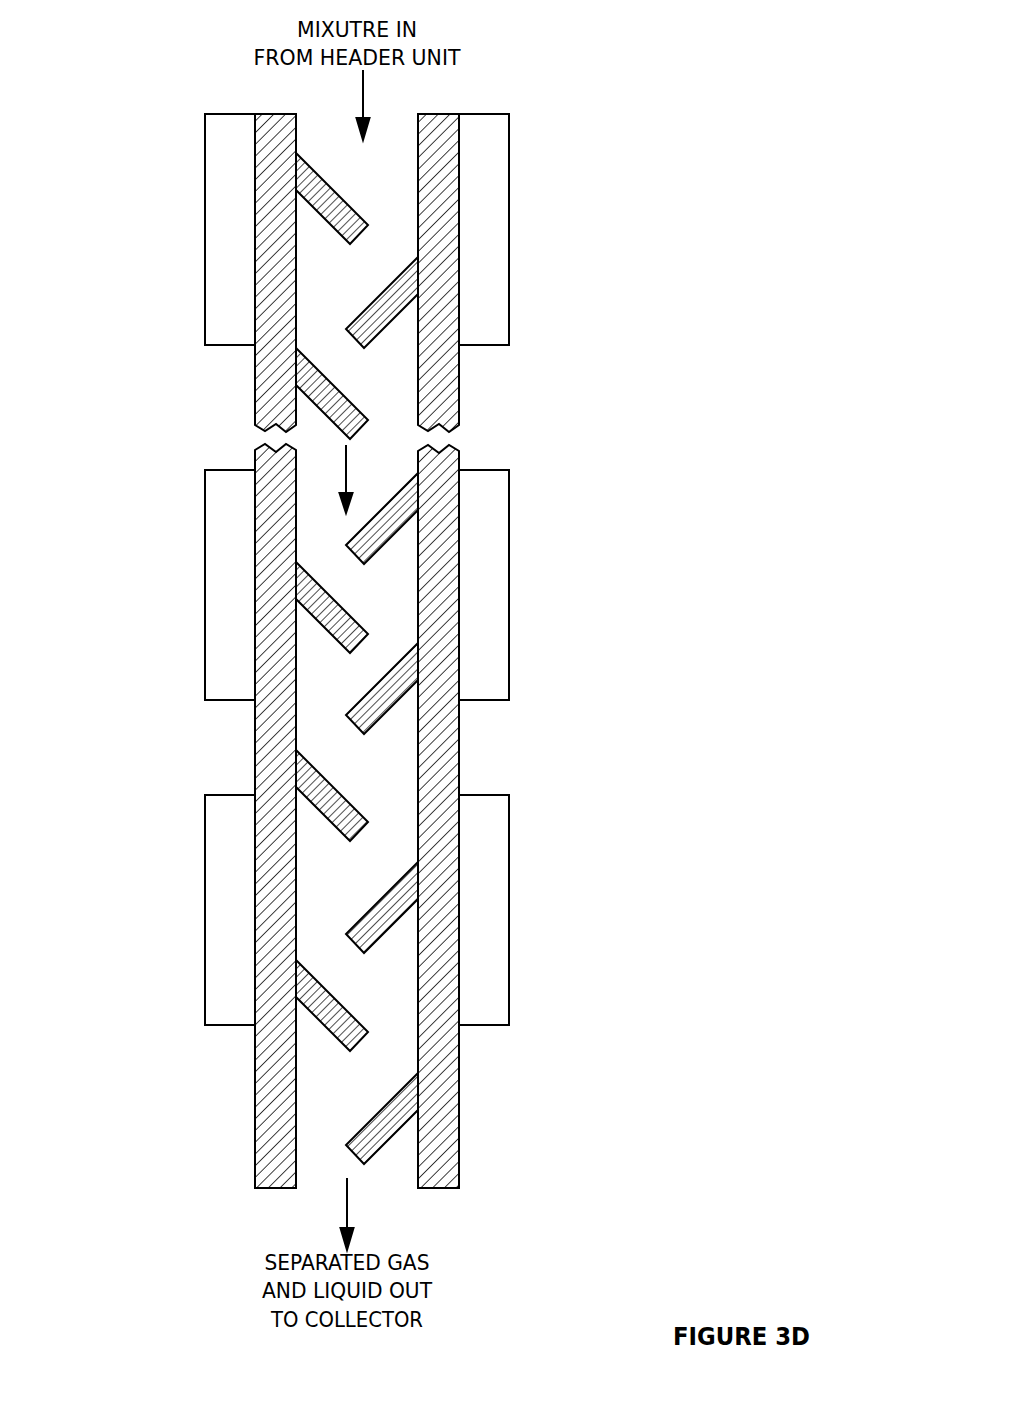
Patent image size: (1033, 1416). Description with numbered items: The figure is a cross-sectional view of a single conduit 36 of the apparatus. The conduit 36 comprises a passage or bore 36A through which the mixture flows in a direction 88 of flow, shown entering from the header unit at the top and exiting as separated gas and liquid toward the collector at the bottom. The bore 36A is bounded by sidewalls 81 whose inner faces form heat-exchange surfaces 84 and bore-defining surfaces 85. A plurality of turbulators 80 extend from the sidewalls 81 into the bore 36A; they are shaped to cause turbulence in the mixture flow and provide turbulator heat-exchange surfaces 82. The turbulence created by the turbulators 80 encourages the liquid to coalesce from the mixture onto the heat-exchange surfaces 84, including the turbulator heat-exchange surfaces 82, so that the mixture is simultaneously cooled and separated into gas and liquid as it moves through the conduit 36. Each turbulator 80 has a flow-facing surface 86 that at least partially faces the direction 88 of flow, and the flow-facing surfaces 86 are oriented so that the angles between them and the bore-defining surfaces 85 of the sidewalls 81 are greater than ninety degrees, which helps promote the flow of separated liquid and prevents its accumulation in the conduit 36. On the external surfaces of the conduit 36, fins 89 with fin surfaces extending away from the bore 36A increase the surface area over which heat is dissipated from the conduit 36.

The conduit 36 is at (603, 252).
The passage or bore 36A is at (332, 350).
The turbulator 80 is at (353, 222).
The sidewall 81 is at (275, 197).
The turbulator heat-exchange surface 82 is at (397, 662).
The heat-exchange surface 84 is at (418, 243).
The bore-defining surface 85 is at (413, 613).
The flow-facing surface 86 is at (382, 518).
The direction of flow 88 is at (346, 468).
The fin 89 is at (237, 127).